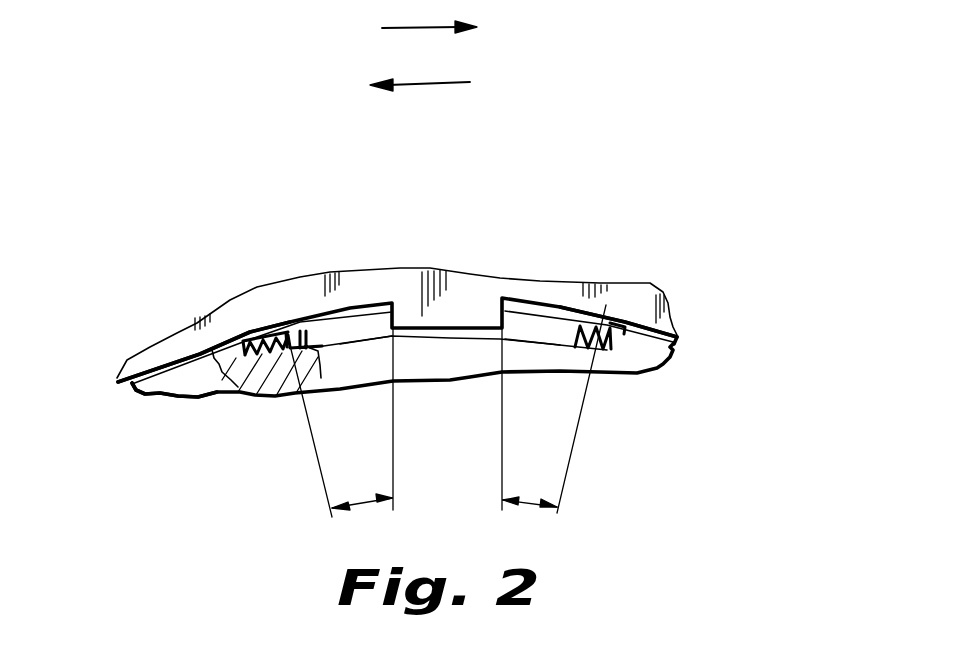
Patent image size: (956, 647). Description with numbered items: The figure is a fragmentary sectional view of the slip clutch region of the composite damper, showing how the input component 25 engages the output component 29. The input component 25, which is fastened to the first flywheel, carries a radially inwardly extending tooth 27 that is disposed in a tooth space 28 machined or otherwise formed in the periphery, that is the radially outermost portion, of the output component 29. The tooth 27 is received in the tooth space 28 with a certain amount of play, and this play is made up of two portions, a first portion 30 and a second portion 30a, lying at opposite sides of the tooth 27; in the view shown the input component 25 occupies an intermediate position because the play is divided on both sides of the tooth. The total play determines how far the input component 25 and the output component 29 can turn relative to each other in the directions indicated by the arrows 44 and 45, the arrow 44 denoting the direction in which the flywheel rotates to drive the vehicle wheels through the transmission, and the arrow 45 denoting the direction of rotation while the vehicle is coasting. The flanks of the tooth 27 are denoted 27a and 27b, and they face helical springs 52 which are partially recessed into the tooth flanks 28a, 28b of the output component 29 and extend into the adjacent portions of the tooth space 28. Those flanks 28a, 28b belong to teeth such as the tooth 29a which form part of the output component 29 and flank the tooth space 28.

The input component 25 is at (660, 295).
The tooth 27 is at (473, 287).
The tooth flank 27a is at (383, 311).
The tooth flank 27b is at (510, 312).
The tooth space 28 is at (333, 325).
The tooth flank 28a is at (288, 337).
The tooth flank 28b is at (606, 305).
The output component 29 is at (271, 380).
The tooth 29a is at (182, 383).
The play 30 is at (340, 422).
The play 30a is at (554, 406).
The arrow 44 is at (414, 28).
The arrow 45 is at (433, 80).
The helical springs 52 is at (300, 343).